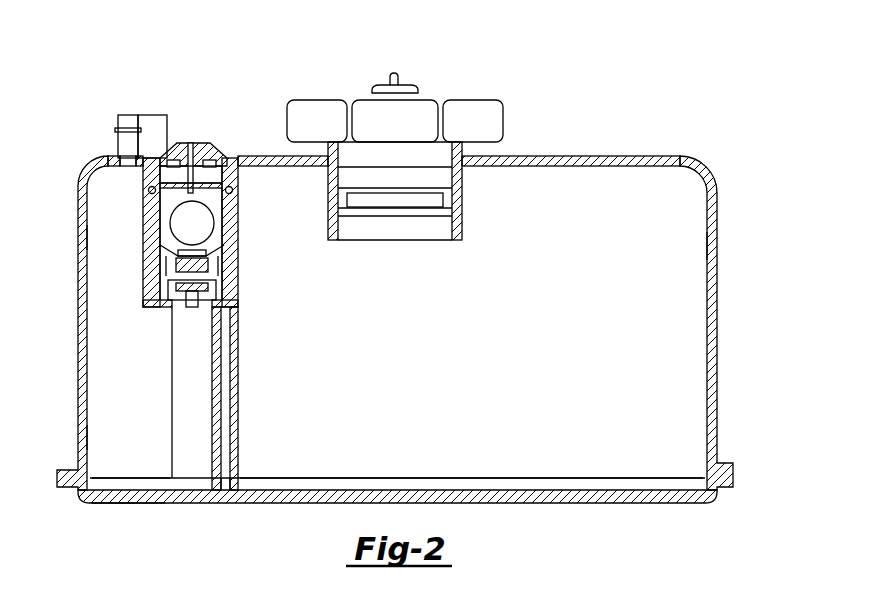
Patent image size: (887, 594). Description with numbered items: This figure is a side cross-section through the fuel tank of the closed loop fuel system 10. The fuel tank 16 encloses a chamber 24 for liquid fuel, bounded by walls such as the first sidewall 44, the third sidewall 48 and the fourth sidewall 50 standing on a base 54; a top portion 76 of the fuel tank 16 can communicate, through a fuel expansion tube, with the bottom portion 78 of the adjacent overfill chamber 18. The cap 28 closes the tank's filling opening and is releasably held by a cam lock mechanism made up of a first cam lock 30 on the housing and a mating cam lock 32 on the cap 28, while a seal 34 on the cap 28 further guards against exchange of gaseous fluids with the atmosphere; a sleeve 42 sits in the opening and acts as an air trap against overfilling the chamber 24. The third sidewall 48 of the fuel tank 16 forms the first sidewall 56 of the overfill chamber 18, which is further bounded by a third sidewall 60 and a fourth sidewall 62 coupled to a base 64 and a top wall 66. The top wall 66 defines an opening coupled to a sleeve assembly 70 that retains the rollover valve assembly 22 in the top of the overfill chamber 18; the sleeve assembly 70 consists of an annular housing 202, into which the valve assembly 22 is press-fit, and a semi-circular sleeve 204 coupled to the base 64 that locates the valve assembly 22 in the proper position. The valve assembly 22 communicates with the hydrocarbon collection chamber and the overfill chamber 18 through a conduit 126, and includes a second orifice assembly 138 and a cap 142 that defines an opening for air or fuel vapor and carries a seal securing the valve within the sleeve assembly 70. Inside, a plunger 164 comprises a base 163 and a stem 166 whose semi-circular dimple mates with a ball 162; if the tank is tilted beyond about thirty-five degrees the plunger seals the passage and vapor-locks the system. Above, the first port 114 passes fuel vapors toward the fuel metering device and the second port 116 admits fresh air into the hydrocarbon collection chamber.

The fuel system 10 is at (753, 84).
The fuel tank 16 is at (718, 194).
The overfill chamber 18 is at (150, 516).
The valve assembly 22 is at (240, 144).
The chamber 24 is at (677, 178).
The cap 28 is at (479, 90).
The first cam lock 30 is at (492, 205).
The mating cam lock 32 is at (445, 180).
The seal 34 is at (338, 160).
The sleeve 42 is at (464, 232).
The first sidewall 44 is at (708, 322).
The third sidewall 48 is at (238, 420).
The fourth sidewall 50 is at (543, 338).
The base 54 is at (649, 480).
The first sidewall 56 is at (228, 497).
The third sidewall 60 is at (95, 386).
The fourth sidewall 62 is at (118, 365).
The base 64 is at (112, 488).
The top wall 66 is at (128, 167).
The sleeve assembly 70 is at (95, 238).
The top portion 76 is at (680, 246).
The bottom portion 78 is at (105, 437).
The first port 114 is at (127, 114).
The second port 116 is at (157, 114).
The conduit 126 is at (189, 141).
The second orifice assembly 138 is at (231, 190).
The cap 142 is at (187, 320).
The ball 162 is at (198, 220).
The base 163 is at (216, 268).
The plunger 164 is at (158, 265).
The stem 166 is at (213, 257).
The annular housing 202 is at (160, 300).
The semi-circular sleeve 204 is at (188, 462).